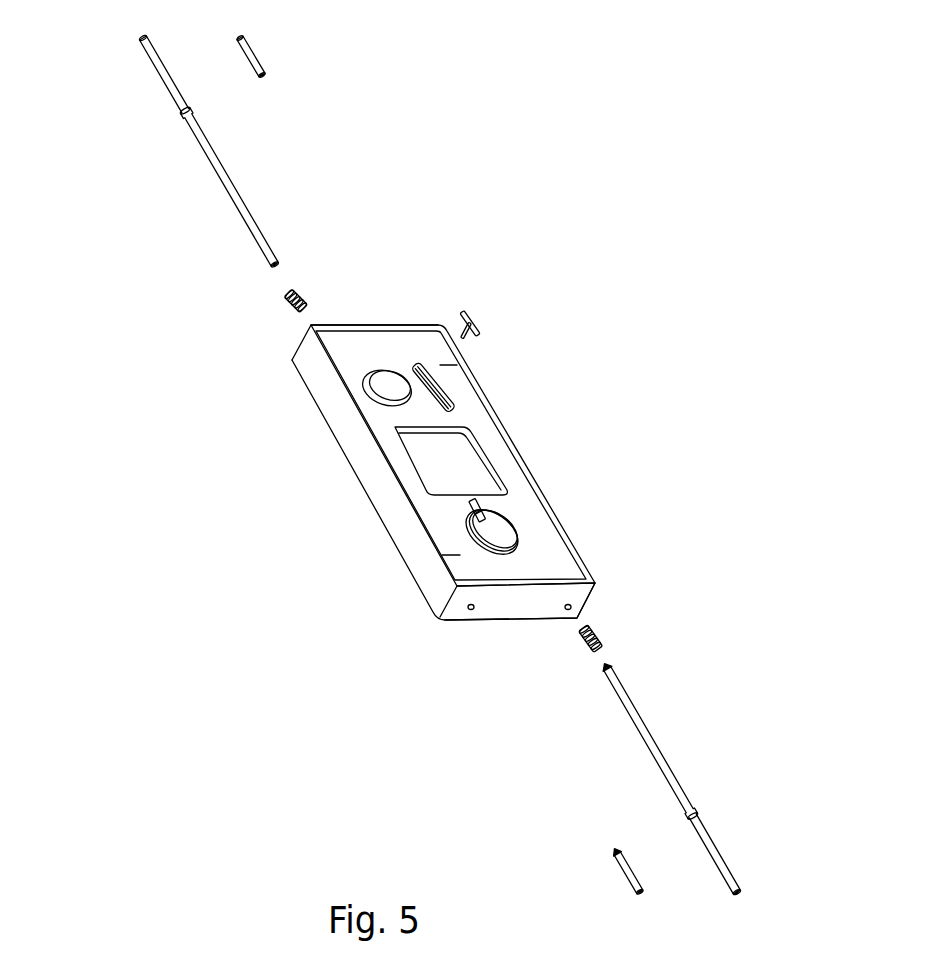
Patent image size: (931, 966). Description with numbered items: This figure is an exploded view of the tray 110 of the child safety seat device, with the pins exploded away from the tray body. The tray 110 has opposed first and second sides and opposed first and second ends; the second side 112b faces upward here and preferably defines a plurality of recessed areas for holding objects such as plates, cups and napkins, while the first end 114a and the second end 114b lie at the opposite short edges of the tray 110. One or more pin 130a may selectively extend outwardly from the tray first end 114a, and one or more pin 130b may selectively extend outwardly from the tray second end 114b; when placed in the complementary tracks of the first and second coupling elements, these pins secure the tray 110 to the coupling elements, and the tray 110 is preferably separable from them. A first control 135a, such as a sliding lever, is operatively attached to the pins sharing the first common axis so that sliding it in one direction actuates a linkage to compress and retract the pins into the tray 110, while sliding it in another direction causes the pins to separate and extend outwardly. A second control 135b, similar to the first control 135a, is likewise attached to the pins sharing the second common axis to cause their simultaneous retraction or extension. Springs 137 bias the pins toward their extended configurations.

The tray 110 is at (208, 491).
The second side 112b is at (473, 413).
The first end 114a is at (515, 621).
The second end 114b is at (385, 325).
The pin 130a is at (723, 855).
The pin 130b is at (162, 78).
The first control 135a is at (466, 509).
The second control 135b is at (479, 319).
The springs 137 is at (287, 302).